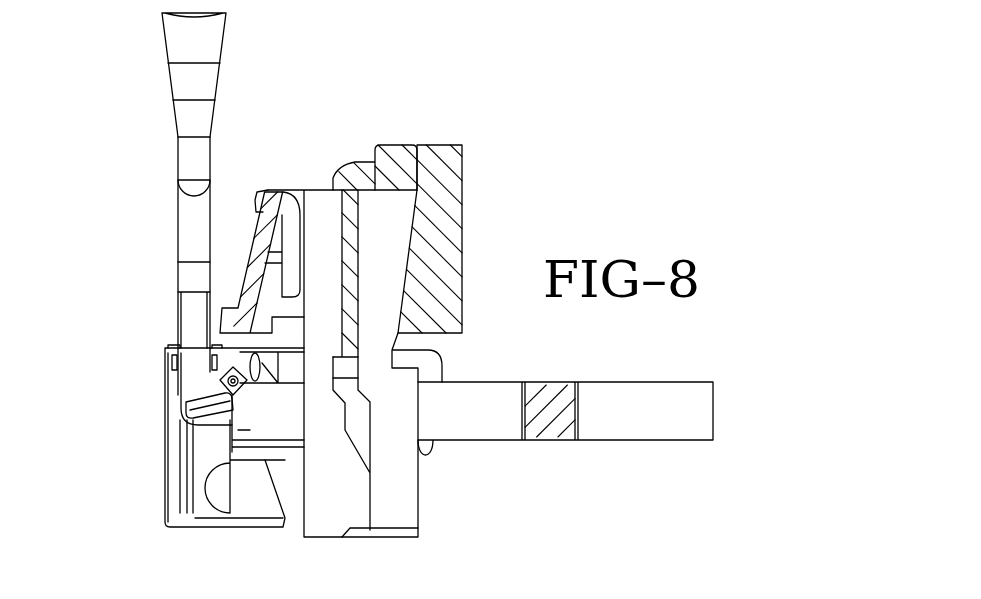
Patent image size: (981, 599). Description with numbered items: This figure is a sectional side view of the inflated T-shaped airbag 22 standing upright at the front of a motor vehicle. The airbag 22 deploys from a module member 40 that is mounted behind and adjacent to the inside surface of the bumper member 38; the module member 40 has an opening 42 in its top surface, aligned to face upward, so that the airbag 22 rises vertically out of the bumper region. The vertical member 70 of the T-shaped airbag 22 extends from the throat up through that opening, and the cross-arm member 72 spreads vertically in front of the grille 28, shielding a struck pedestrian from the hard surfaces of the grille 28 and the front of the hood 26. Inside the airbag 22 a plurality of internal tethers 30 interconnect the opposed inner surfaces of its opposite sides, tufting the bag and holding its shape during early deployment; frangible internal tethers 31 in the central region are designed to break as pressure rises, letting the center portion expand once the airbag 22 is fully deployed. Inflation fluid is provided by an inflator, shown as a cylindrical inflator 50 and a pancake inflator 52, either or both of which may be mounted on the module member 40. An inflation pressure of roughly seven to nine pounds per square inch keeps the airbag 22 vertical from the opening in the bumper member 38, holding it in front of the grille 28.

The inflatable airbag 22 is at (162, 40).
The cross-arm member 72 is at (166, 72).
The internal tethers 30 is at (186, 100).
The frangible internal tethers 31 is at (195, 63).
The vertical member 70 is at (190, 307).
The grille 28 is at (278, 190).
The hood 26 is at (440, 145).
The module member 40 is at (180, 388).
The opening 42 is at (180, 345).
The cylindrical inflator 50 is at (237, 395).
The pancake inflator 52 is at (200, 420).
The bumper member 38 is at (198, 522).